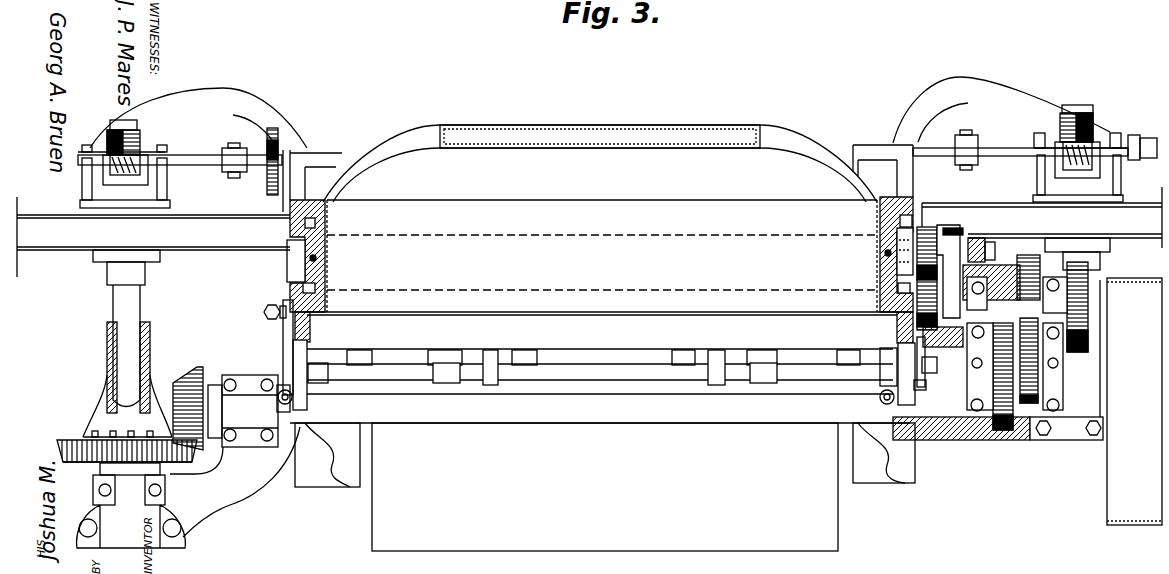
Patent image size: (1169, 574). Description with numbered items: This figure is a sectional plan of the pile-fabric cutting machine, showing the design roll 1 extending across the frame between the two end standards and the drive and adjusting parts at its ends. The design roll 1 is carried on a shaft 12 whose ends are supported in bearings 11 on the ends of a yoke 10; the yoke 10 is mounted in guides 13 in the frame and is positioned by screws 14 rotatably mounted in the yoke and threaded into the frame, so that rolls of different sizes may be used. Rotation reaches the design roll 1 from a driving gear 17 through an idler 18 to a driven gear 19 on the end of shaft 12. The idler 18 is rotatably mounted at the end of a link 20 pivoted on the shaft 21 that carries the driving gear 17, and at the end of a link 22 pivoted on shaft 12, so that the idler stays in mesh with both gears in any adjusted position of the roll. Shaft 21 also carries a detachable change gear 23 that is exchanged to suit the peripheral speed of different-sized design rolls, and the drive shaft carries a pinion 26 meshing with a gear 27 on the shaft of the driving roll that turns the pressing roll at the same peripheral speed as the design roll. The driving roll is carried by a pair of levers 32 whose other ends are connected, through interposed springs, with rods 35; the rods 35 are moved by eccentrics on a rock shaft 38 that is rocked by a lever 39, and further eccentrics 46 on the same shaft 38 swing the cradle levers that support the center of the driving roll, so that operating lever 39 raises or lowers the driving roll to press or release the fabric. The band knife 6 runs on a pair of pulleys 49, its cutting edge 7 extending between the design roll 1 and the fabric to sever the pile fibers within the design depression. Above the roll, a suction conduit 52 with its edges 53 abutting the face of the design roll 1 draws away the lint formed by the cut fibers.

The design roll 1 is at (602, 220).
The band knife 6 is at (153, 237).
The edge of the knife 7 is at (190, 250).
The yoke 10 is at (326, 292).
The bearings 11 is at (288, 290).
The shaft 12 is at (290, 256).
The guides 13 is at (314, 205).
The screws 14 is at (318, 258).
The driving gear 17 is at (905, 333).
The idler 18 is at (892, 322).
The driven gear 19 is at (940, 233).
The link 20 is at (924, 394).
The shaft 21 is at (1037, 282).
The link 22 is at (975, 240).
The detachable gear 23 is at (1077, 289).
The pinion 26 is at (948, 310).
The gear 27 is at (962, 229).
The levers 32 is at (293, 343).
The rods 35 is at (300, 404).
The rock shaft 38 is at (627, 373).
The lever 39 is at (918, 390).
The eccentrics 46 is at (493, 385).
The pulleys 49 is at (250, 214).
The suction conduit 52 is at (665, 125).
The edges of the conduit 53 is at (560, 200).